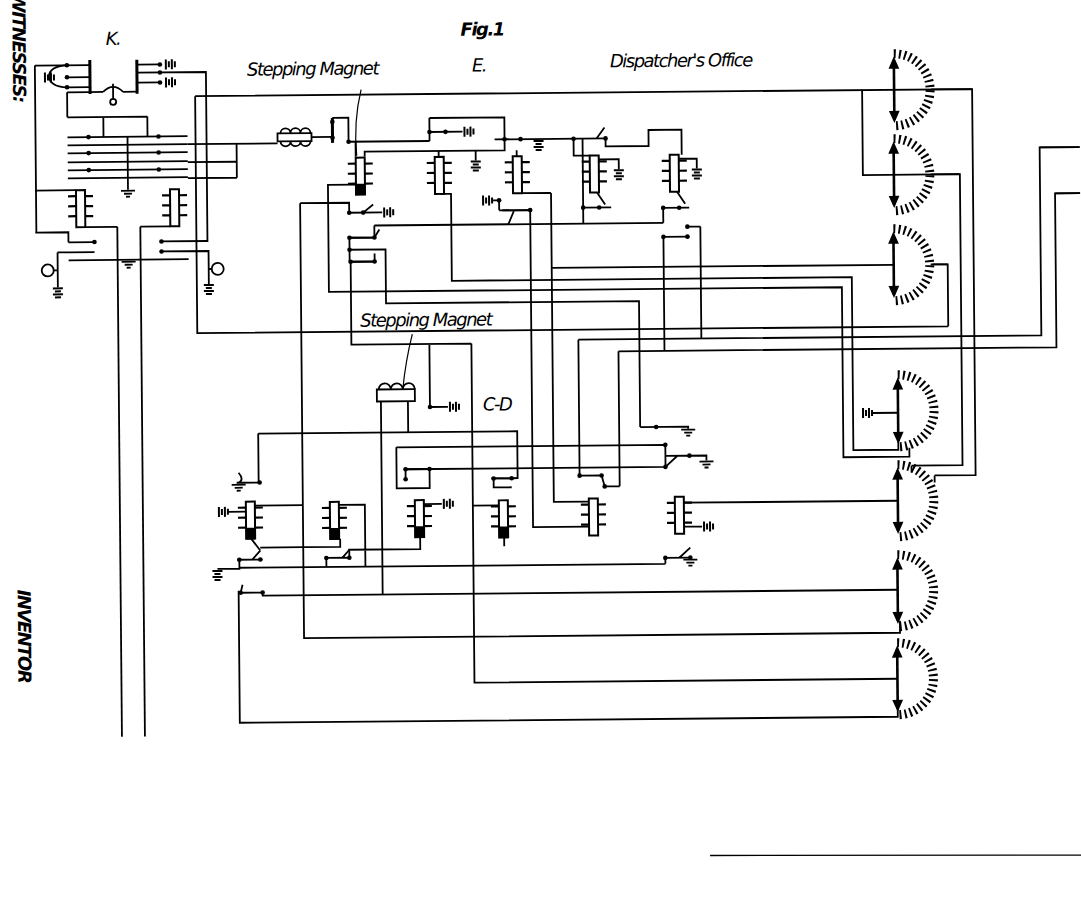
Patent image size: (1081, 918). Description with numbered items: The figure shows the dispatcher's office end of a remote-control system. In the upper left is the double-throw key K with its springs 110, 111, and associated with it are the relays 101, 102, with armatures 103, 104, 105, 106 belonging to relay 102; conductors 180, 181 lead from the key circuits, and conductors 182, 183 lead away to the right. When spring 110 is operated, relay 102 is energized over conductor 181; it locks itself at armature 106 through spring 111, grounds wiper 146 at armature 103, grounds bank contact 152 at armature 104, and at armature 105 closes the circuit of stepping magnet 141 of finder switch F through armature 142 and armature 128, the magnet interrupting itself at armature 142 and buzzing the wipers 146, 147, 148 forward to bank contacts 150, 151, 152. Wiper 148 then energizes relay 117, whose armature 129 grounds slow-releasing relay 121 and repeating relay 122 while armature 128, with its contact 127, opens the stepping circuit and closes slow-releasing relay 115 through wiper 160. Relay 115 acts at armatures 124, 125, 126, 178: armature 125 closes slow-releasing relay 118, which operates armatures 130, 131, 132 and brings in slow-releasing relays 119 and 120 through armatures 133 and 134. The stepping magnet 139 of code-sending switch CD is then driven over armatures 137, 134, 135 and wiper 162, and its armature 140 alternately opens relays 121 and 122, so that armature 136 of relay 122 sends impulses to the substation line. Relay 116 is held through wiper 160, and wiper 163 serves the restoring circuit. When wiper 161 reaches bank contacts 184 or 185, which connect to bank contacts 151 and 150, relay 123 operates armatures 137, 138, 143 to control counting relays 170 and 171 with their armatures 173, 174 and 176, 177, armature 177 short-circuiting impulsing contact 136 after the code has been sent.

The relay 101 is at (77, 204).
The relay 102 is at (181, 204).
The armature 103 is at (166, 131).
The armature 104 is at (190, 141).
The armature 105 is at (190, 160).
The armature 106 is at (190, 240).
The spring 110 is at (152, 58).
The spring 111 is at (45, 57).
The slow-releasing relay 115 is at (356, 172).
The relay 116 is at (436, 172).
The relay 117 is at (524, 170).
The slow-releasing relay 118 is at (256, 536).
The slow-releasing relay 119 is at (334, 500).
The slow-releasing relay 120 is at (424, 531).
The slow-releasing relay 121 is at (503, 540).
The repeating relay 122 is at (587, 516).
The relay 123 is at (673, 515).
The armature 124 is at (356, 141).
The armature 125 is at (366, 208).
The armature 126 is at (367, 274).
The contact 127 is at (437, 113).
The armature 128 is at (512, 138).
The armature 129 is at (508, 218).
The armature 130 is at (240, 475).
The armature 131 is at (235, 555).
The armature 132 is at (242, 592).
The armature 133 is at (338, 560).
The armature 134 is at (408, 470).
The armature 135 is at (494, 477).
The armature 136 is at (600, 474).
The armature 137 is at (670, 470).
The armature 138 is at (665, 558).
The stepping magnet 139 is at (387, 388).
The armature 140 is at (429, 400).
The stepping magnet 141 is at (279, 130).
The armature 142 is at (334, 122).
The armature 143 is at (675, 427).
The wiper 146 is at (893, 80).
The wiper 147 is at (893, 200).
The wiper 148 is at (892, 260).
The bank contact 150 is at (934, 92).
The bank contact 151 is at (934, 180).
The bank contact 152 is at (932, 262).
The wiper 160 is at (896, 410).
The wiper 161 is at (895, 496).
The wiper 162 is at (894, 586).
The wiper 163 is at (893, 676).
The relay 170 is at (603, 166).
The relay 171 is at (681, 166).
The armature 173 is at (598, 136).
The armature 174 is at (604, 230).
The armature 176 is at (664, 208).
The armature 177 is at (681, 244).
The armature 178 is at (378, 240).
The conductor 180 is at (118, 722).
The conductor 181 is at (141, 722).
The conductor 182 is at (1053, 152).
The conductor 183 is at (1060, 198).
The bank contact 184 is at (914, 472).
The bank contact 185 is at (934, 483).